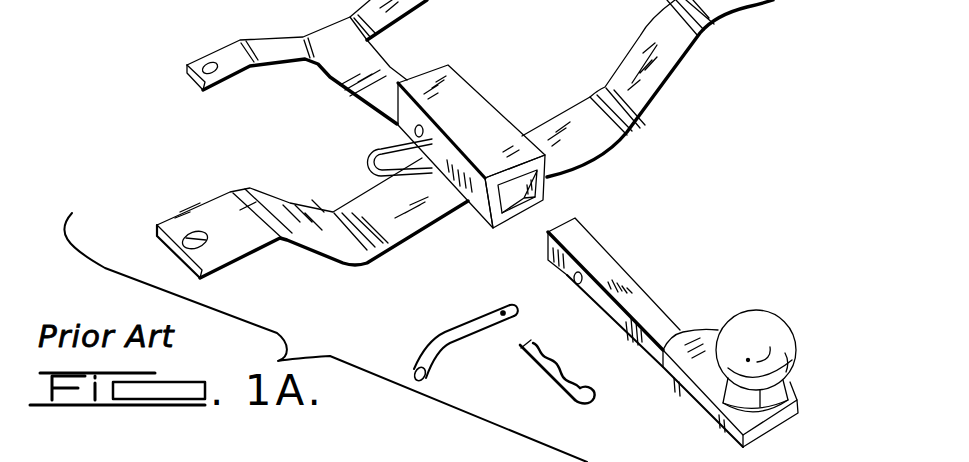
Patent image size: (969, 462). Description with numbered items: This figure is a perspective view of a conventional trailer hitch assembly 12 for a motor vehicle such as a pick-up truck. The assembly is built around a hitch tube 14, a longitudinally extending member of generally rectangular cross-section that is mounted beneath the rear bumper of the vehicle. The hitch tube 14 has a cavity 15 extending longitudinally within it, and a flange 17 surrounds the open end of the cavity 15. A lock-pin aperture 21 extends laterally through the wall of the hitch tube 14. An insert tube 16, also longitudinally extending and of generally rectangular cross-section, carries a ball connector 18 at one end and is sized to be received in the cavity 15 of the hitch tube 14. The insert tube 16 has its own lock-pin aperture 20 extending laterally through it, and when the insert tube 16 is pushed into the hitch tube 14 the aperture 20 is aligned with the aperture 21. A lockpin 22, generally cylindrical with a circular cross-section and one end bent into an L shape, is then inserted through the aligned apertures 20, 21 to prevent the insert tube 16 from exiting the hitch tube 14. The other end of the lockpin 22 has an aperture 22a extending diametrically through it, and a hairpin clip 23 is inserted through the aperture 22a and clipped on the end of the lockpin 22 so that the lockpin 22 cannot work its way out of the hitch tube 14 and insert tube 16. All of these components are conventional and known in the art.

The trailer hitch assembly 12 is at (470, 72).
The hitch tube 14 is at (522, 150).
The cavity 15 is at (548, 198).
The insert tube 16 is at (655, 306).
The flange 17 is at (549, 177).
The ball connector 18 is at (757, 328).
The lock-pin aperture 20 is at (573, 280).
The lock-pin aperture 21 is at (415, 131).
The lockpin 22 is at (450, 336).
The aperture 22a is at (505, 316).
The hairpin clip 23 is at (594, 400).